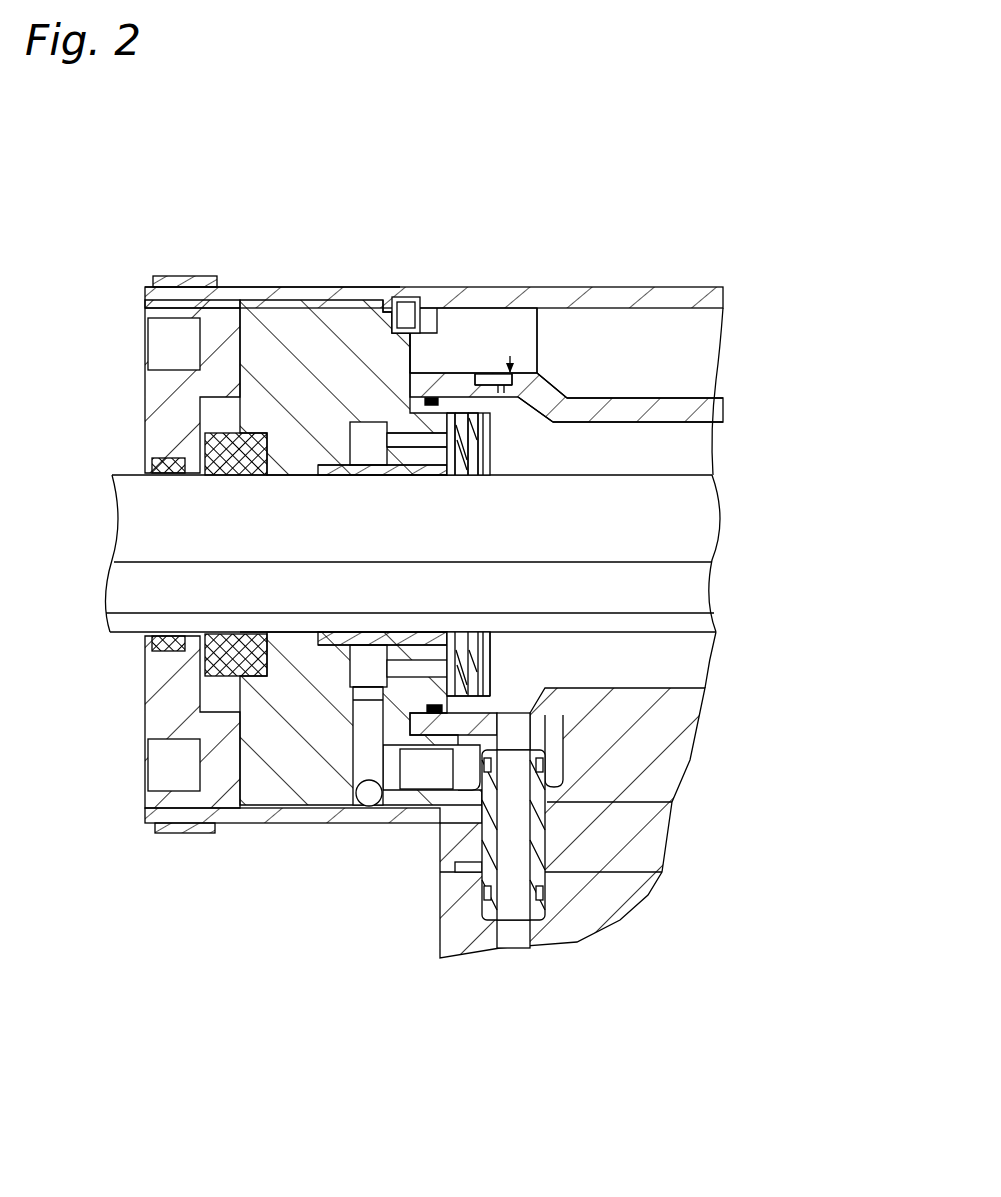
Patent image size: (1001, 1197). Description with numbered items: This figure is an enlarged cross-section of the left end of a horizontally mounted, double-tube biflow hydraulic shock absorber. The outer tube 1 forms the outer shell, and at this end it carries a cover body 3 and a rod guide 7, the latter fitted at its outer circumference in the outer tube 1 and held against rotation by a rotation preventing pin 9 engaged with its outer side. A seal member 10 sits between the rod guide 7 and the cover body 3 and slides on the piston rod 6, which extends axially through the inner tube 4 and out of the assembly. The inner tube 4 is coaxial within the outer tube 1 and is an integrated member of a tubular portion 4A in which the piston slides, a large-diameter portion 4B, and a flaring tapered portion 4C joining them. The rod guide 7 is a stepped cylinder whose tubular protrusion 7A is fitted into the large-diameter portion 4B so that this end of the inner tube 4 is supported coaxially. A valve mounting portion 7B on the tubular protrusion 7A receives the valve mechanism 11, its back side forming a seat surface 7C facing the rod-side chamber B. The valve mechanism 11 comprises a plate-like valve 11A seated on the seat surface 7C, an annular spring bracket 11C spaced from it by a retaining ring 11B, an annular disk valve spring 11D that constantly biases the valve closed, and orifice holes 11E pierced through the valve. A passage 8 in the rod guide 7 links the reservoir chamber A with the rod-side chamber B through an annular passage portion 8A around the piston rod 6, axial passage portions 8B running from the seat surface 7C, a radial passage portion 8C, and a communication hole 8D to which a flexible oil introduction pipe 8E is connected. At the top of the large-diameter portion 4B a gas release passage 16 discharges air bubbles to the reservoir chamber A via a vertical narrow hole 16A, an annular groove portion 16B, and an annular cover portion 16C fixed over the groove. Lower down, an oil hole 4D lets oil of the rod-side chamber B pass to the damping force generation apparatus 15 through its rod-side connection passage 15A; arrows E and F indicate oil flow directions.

The outer tube 1 is at (253, 292).
The cover body 3 is at (162, 390).
The inner tube 4 is at (693, 712).
The tubular portion 4A is at (705, 408).
The large-diameter portion 4B is at (427, 302).
The tapered portion 4C is at (562, 396).
The oil hole 4D is at (520, 732).
The piston rod 6 is at (700, 530).
The rod guide 7 is at (335, 352).
The tubular protrusion 7A is at (436, 400).
The valve mounting portion 7B is at (468, 790).
The seat surface 7C is at (415, 790).
The passage 8 is at (400, 677).
The annular passage portion 8A is at (345, 412).
The axial passage portions 8B is at (368, 440).
The radial passage portion 8C is at (363, 733).
The communication hole 8D is at (370, 795).
The oil introduction pipe 8E is at (470, 850).
The rotation preventing pin 9 is at (405, 312).
The seal member 10 is at (220, 453).
The valve mechanism 11 is at (497, 442).
The plate-like valve 11A is at (453, 420).
The retaining ring 11B is at (530, 730).
The annular spring bracket 11C is at (474, 416).
The valve spring 11D is at (462, 412).
The orifice holes 11E is at (500, 690).
The damping force generation apparatus 15 is at (622, 926).
The rod-side connection passage 15A is at (490, 843).
The gas release passage 16 is at (505, 384).
The narrow hole 16A is at (545, 378).
The annular groove portion 16B is at (492, 378).
The annular cover portion 16C is at (520, 376).
The reservoir chamber A is at (727, 300).
The rod-side chamber B is at (705, 457).
The direction E is at (643, 654).
The direction F is at (658, 456).